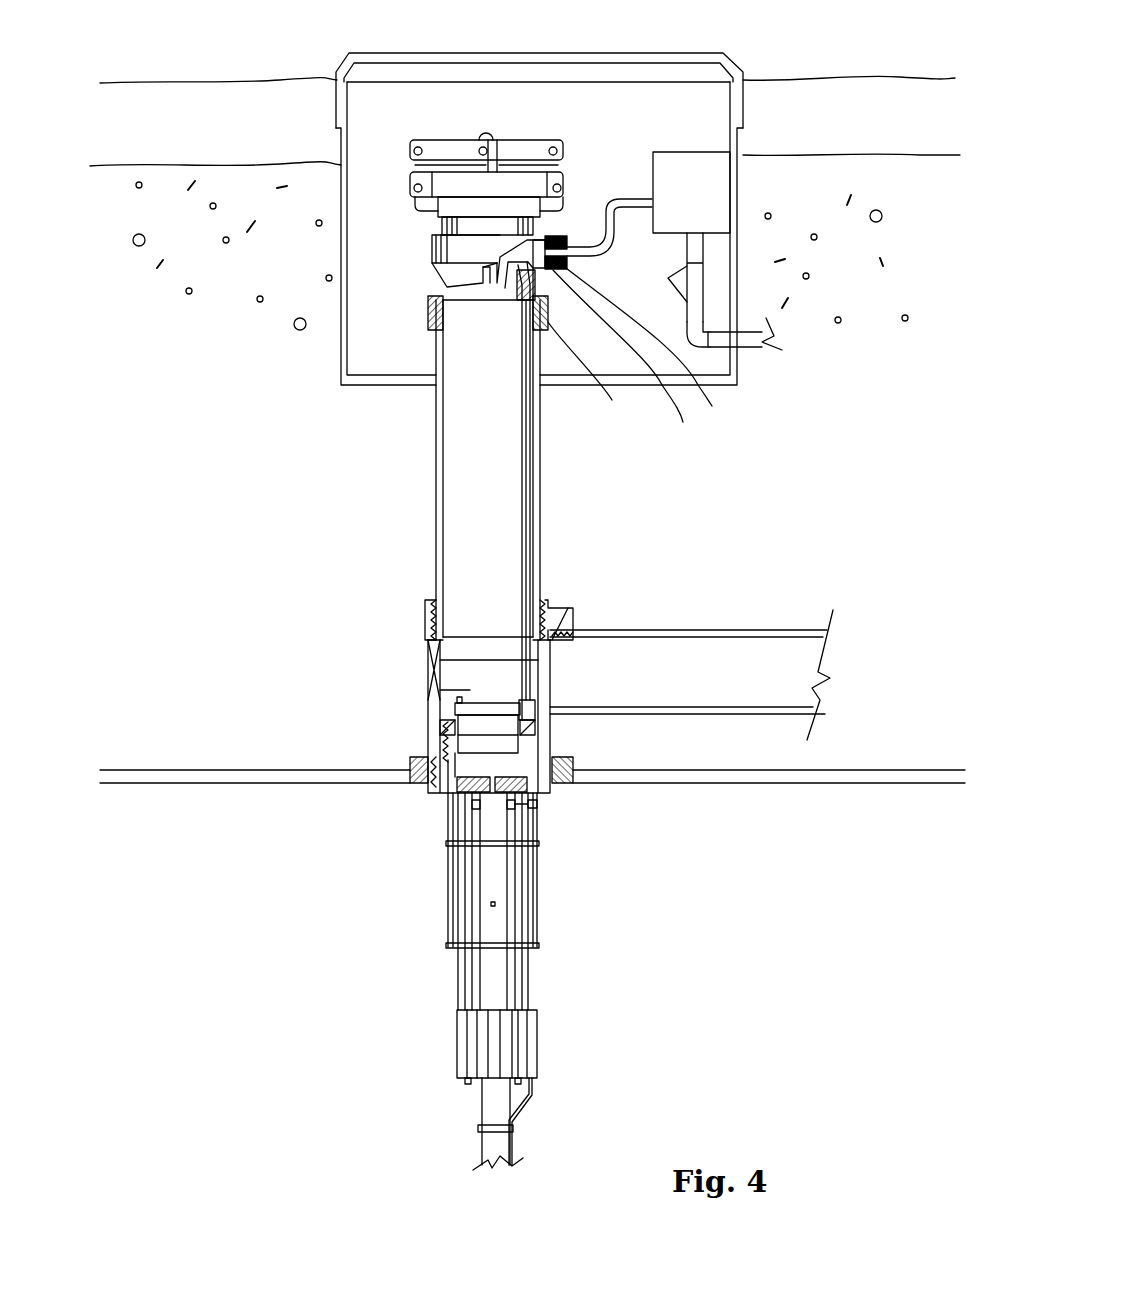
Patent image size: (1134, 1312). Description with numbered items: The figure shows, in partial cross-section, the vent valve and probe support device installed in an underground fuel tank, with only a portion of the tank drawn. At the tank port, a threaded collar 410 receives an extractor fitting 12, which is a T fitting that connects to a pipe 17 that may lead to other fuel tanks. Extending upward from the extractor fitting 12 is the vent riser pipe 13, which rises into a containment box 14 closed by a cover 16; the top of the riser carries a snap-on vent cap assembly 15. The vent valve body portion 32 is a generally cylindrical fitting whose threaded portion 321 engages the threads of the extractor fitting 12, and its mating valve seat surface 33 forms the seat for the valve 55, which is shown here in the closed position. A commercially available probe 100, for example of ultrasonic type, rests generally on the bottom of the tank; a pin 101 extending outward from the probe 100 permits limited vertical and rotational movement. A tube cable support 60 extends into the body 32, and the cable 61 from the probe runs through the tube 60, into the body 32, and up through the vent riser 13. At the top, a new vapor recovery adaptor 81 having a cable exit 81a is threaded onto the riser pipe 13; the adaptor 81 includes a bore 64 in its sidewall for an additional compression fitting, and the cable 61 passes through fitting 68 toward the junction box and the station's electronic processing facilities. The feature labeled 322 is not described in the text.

The cover 16 is at (458, 53).
The containment box 14 is at (338, 360).
The vent cap assembly 15 is at (520, 135).
The cable exit 81a is at (560, 235).
The vapor recovery adaptor 81 is at (599, 370).
The bore 64 is at (623, 358).
The fitting 68 is at (646, 348).
The vent riser pipe 13 is at (542, 500).
The cable 61 is at (520, 515).
The extractor fitting 12 is at (560, 612).
The pipe 17 is at (663, 630).
The vent valve body portion 32 is at (505, 700).
The housing bore 322 is at (483, 697).
The mating valve seat surface 33 is at (455, 705).
The threaded portion 321 is at (438, 652).
The valve 55 is at (460, 765).
The threaded collar 410 is at (578, 757).
The tube cable support 60 is at (540, 985).
The pin 101 is at (538, 806).
The probe 100 is at (478, 1152).